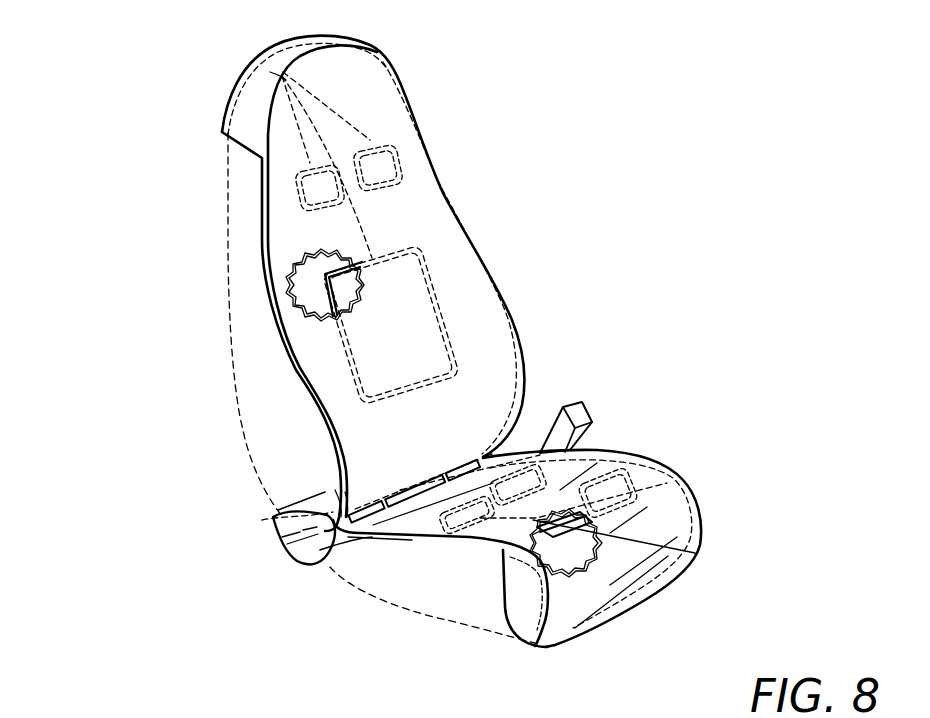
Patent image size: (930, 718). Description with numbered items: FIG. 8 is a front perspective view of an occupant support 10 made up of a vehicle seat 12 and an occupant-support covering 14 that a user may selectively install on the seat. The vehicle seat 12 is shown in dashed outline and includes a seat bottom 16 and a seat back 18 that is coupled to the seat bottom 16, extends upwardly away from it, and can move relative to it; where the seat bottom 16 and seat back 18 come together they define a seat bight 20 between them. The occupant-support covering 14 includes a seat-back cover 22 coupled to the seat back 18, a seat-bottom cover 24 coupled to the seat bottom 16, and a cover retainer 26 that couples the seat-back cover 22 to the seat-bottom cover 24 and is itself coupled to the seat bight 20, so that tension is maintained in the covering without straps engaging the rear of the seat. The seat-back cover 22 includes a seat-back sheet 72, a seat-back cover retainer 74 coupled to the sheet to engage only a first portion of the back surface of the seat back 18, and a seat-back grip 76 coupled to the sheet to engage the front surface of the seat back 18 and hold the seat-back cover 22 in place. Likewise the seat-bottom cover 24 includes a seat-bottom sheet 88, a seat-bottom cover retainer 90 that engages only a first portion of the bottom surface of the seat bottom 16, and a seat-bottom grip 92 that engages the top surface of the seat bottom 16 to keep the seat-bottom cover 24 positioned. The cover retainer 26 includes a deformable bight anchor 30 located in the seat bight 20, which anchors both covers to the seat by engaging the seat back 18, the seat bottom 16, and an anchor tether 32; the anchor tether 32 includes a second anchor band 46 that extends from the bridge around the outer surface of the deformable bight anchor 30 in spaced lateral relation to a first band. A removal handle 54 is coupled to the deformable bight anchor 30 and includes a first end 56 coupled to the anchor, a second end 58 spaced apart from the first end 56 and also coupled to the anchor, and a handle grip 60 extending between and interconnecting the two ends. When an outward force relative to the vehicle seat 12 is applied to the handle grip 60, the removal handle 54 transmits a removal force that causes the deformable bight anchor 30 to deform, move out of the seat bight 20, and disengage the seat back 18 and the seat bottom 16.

The occupant support 10 is at (90, 85).
The vehicle seat 12 is at (287, 383).
The occupant-support covering 14 is at (463, 350).
The seat bottom 16 is at (335, 590).
The seat back 18 is at (215, 268).
The seat bight 20 is at (248, 514).
The seat-back cover 22 is at (446, 196).
The seat-bottom cover 24 is at (642, 486).
The cover retainer 26 is at (492, 455).
The deformable bight anchor 30 is at (288, 555).
The anchor tether 32 is at (272, 469).
The second anchor band 46 is at (345, 492).
The removal handle 54 is at (369, 575).
The first end 56 is at (372, 503).
The second end 58 is at (453, 527).
The handle grip 60 is at (407, 510).
The seat-back sheet 72 is at (477, 297).
The seat-back cover retainer 74 is at (245, 150).
The seat-back grip 76 is at (282, 76).
The seat-bottom sheet 88 is at (563, 465).
The seat-bottom cover retainer 90 is at (500, 588).
The seat-bottom grip 92 is at (695, 553).